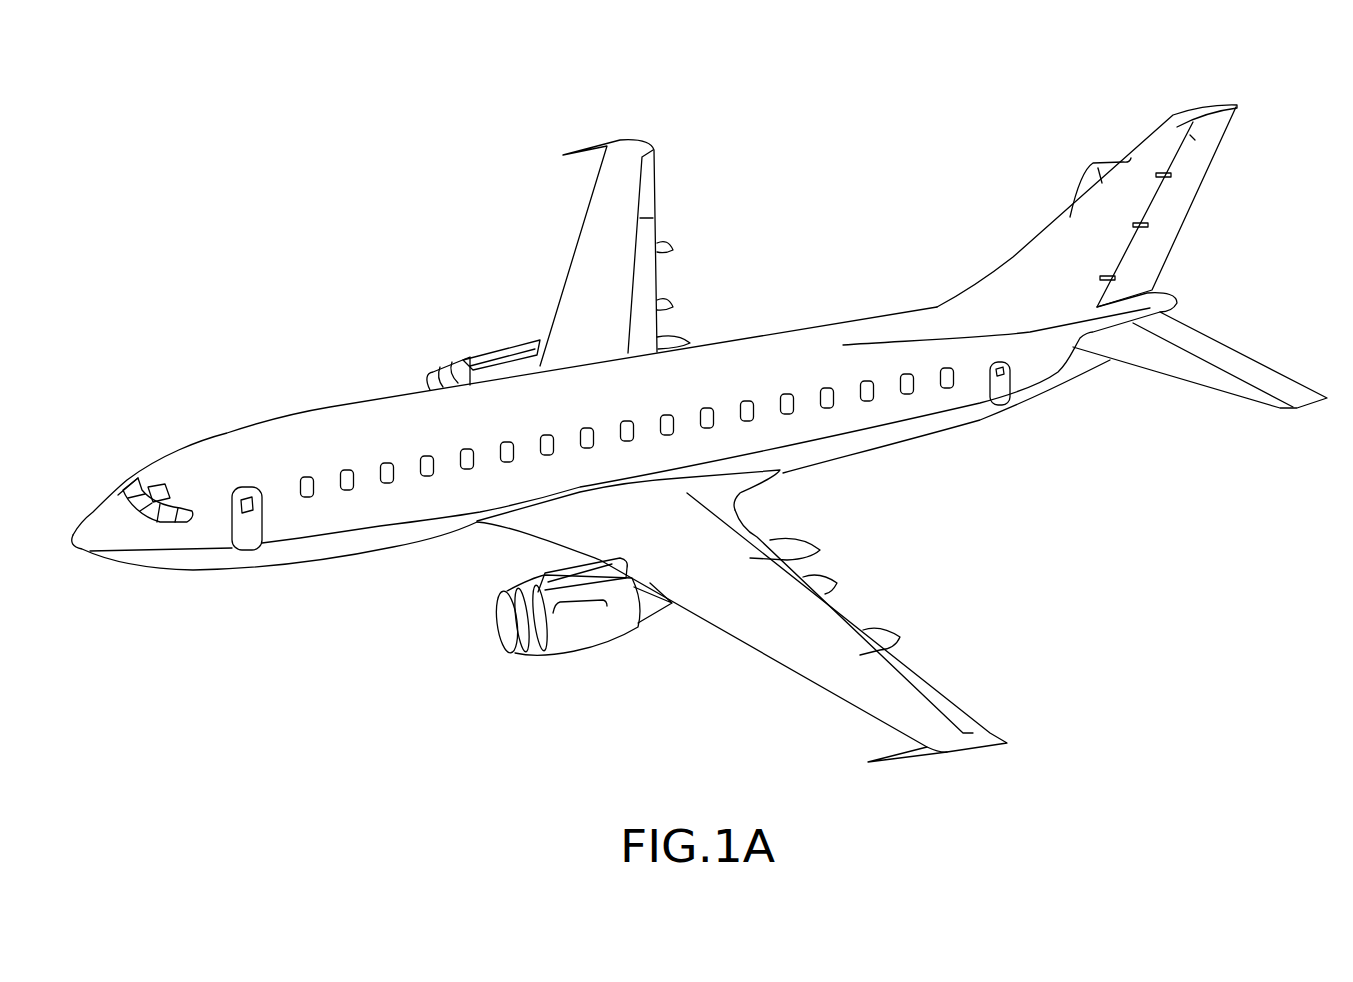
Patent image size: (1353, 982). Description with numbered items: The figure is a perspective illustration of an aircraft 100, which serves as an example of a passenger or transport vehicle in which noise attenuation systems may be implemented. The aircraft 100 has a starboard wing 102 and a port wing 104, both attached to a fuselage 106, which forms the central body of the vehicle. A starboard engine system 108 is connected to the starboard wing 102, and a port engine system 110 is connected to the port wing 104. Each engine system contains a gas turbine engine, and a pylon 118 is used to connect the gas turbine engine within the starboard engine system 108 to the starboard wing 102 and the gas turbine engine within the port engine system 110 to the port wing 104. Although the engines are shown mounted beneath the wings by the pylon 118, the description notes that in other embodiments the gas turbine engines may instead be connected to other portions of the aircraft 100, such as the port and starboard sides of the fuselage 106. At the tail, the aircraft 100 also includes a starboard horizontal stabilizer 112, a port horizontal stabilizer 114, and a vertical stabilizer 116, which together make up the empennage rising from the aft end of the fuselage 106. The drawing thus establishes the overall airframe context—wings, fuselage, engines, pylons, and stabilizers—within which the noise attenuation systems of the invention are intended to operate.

The aircraft 100 is at (218, 252).
The starboard wing 102 is at (623, 202).
The port wing 104 is at (808, 627).
The fuselage 106 is at (843, 320).
The starboard engine system 108 is at (440, 362).
The port engine system 110 is at (587, 637).
The starboard horizontal stabilizer 112 is at (1089, 167).
The port horizontal stabilizer 114 is at (1203, 366).
The vertical stabilizer 116 is at (1210, 112).
The pylon 118 is at (523, 350).